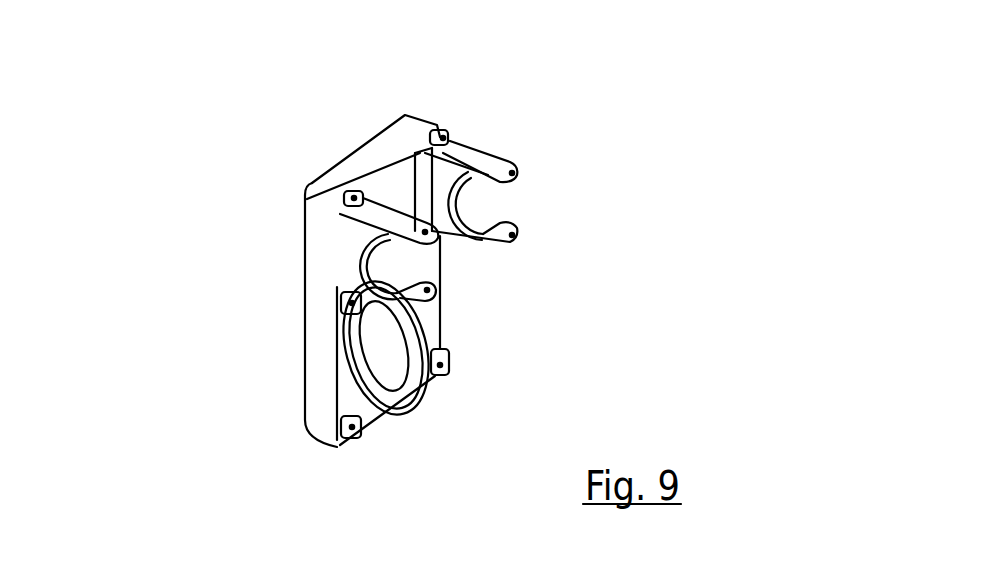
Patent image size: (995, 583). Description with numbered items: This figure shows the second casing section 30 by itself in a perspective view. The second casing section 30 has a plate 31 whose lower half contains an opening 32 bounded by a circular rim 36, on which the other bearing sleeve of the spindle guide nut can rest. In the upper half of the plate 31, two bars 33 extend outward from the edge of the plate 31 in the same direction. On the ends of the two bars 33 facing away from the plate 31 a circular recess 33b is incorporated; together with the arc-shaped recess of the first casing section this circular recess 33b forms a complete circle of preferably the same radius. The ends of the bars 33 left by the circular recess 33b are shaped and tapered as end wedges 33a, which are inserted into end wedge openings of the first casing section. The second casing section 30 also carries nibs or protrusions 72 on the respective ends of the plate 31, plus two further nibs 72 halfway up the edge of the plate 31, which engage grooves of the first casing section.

The second casing section 30 is at (305, 345).
The plate 31 is at (388, 182).
The opening 32 is at (382, 368).
The bars 33 is at (442, 170).
The end wedges 33a is at (512, 173).
The circular recess 33b is at (470, 203).
The circular rim 36 is at (375, 330).
The nibs or protrusions 72 is at (450, 135).